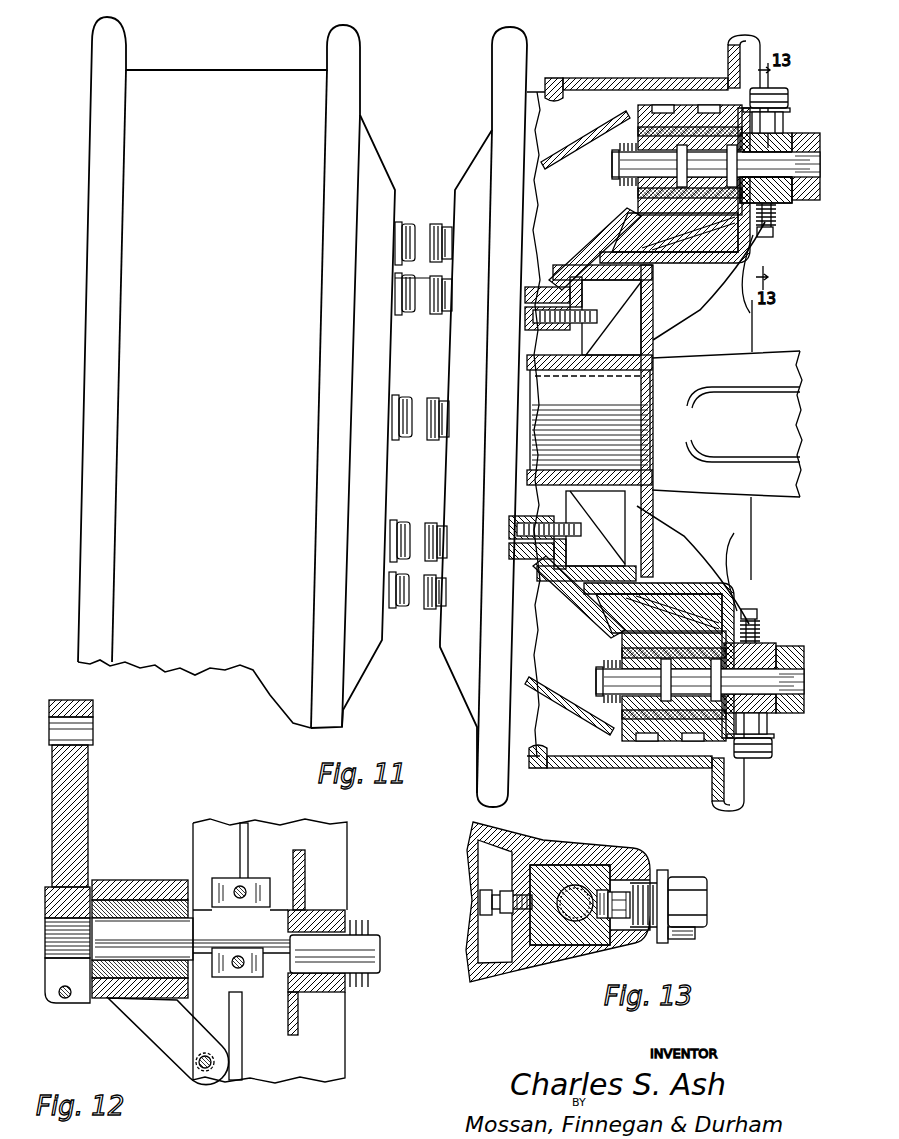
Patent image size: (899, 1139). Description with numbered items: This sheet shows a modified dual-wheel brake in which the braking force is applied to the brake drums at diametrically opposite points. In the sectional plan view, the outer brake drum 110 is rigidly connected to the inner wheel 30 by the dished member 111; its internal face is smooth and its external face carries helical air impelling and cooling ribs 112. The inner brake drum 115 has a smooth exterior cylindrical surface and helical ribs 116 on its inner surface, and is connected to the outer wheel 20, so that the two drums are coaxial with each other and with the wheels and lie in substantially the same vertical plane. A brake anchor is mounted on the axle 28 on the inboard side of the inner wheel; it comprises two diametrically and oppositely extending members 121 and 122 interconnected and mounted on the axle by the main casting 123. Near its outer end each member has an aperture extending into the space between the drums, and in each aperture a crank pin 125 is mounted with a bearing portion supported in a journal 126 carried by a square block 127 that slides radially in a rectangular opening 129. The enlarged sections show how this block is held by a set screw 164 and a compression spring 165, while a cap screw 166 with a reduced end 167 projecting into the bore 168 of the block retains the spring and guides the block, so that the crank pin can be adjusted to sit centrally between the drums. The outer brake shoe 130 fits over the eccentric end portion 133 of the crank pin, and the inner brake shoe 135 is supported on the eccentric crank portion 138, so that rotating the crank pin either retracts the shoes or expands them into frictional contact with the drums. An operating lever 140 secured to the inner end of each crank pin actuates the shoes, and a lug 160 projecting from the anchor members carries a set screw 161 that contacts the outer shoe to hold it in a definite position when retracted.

In FIG. 11, the outer wheel 20 is at (228, 70).
In FIG. 11, the axle 28 is at (758, 370).
In FIG. 11, the inner wheel 30 is at (581, 78).
In FIG. 11, the outer brake drum 110 is at (705, 115).
In FIG. 11, the dished member 111 is at (600, 132).
In FIG. 11, the helical air impelling and cooling ribs 112 is at (690, 107).
In FIG. 11, the inner brake drum 115 is at (679, 252).
In FIG. 11, the helical ribs 116 is at (637, 217).
In FIG. 11, the brake anchor member 121 is at (731, 590).
In FIG. 11, the brake anchor member 122 is at (752, 314).
In FIG. 13, the brake anchor member 122 is at (487, 980).
In FIG. 11, the main casting 123 is at (652, 322).
In FIG. 11, the crank pin 125 is at (805, 196).
In FIG. 12, the crank pin 125 is at (36, 927).
In FIG. 11, the journal 126 is at (764, 419).
In FIG. 12, the journal 126 is at (118, 925).
In FIG. 13, the journal 126 is at (577, 896).
In FIG. 11, the square block 127 is at (780, 197).
In FIG. 12, the square block 127 is at (155, 907).
In FIG. 13, the square block 127 is at (548, 865).
In FIG. 11, the rectangular opening 129 is at (772, 200).
In FIG. 13, the rectangular opening 129 is at (625, 872).
In FIG. 11, the outer brake shoe 130 is at (640, 137).
In FIG. 12, the outer brake shoe 130 is at (306, 875).
In FIG. 11, the eccentric end portion 133 is at (630, 165).
In FIG. 12, the eccentric end portion 133 is at (345, 945).
In FIG. 11, the inner brake shoe 135 is at (643, 187).
In FIG. 12, the inner brake shoe 135 is at (266, 840).
In FIG. 11, the eccentric crank portion 138 is at (716, 416).
In FIG. 12, the eccentric crank portion 138 is at (251, 933).
In FIG. 11, the operating lever 140 is at (805, 137).
In FIG. 12, the operating lever 140 is at (88, 772).
In FIG. 12, the lug 160 is at (155, 1037).
In FIG. 12, the set screw 161 is at (197, 1062).
In FIG. 11, the set screw 164 is at (762, 222).
In FIG. 13, the set screw 164 is at (480, 896).
In FIG. 13, the compression spring 165 is at (620, 925).
In FIG. 11, the cap screw 166 is at (780, 100).
In FIG. 13, the cap screw 166 is at (690, 907).
In FIG. 13, the reduced end 167 is at (663, 870).
In FIG. 13, the bore 168 is at (603, 915).